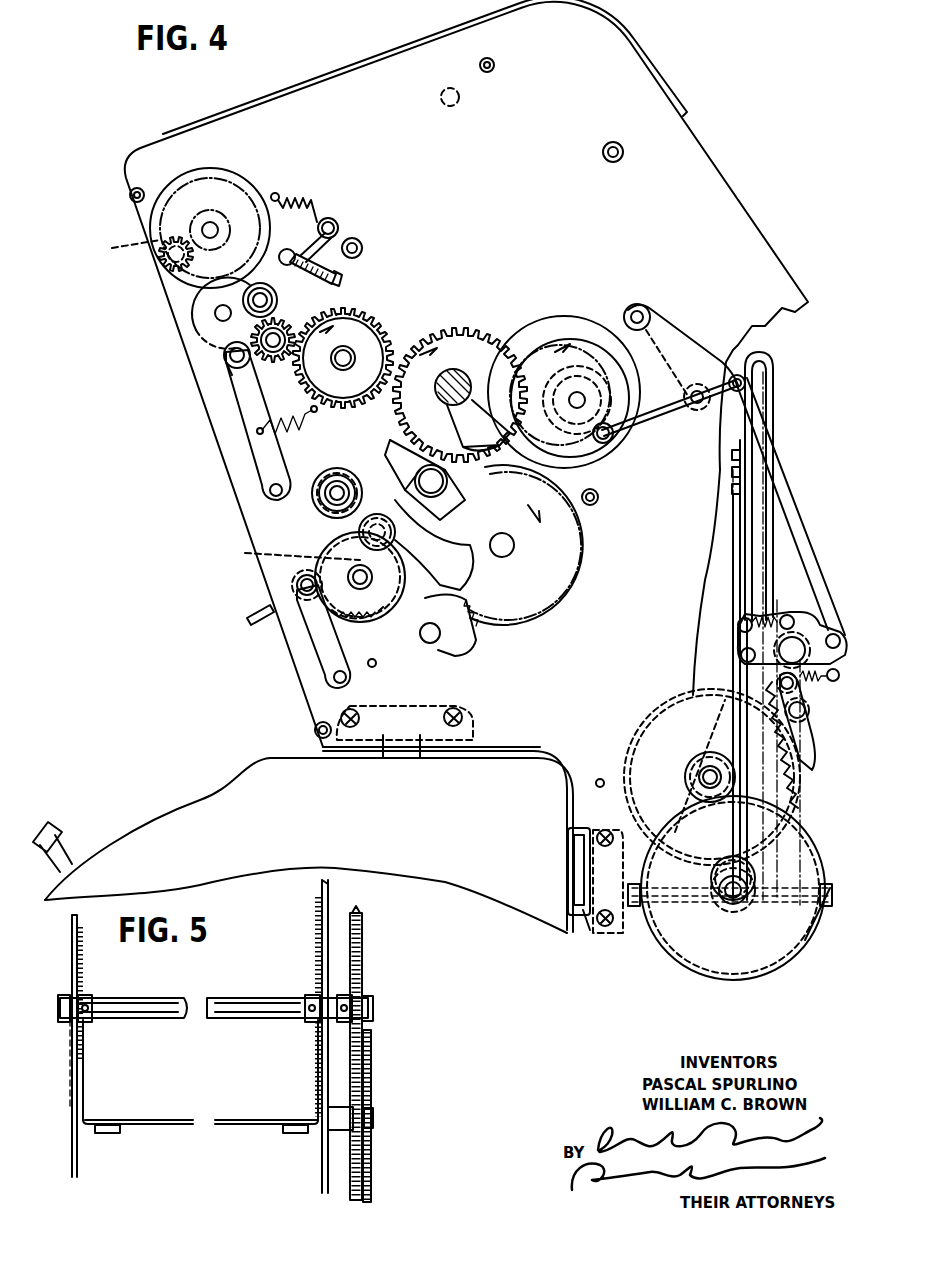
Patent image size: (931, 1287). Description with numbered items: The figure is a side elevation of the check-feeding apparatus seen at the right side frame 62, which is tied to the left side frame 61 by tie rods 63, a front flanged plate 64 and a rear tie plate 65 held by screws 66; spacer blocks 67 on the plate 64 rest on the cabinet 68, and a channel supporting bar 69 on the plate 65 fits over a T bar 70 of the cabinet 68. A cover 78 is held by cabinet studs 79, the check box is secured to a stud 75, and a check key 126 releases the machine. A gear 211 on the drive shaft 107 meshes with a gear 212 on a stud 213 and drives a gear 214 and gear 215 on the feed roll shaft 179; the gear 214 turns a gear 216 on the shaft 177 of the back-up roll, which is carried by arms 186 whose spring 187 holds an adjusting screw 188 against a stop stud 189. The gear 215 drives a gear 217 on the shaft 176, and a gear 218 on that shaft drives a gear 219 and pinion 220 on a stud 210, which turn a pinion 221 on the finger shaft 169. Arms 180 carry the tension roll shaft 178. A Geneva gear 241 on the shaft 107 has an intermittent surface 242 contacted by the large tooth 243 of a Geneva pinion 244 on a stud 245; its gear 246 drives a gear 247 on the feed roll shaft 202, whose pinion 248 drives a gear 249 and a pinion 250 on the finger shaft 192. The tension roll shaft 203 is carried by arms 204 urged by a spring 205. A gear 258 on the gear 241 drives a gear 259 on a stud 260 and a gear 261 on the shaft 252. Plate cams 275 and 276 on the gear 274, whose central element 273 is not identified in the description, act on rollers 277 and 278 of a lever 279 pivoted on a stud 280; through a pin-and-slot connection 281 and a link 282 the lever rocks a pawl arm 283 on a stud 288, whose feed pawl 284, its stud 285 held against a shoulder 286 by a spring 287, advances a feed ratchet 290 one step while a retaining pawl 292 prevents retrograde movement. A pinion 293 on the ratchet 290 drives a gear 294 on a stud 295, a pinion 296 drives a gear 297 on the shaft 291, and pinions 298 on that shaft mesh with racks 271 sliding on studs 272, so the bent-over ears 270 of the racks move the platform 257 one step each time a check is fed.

In FIG. 4, the right side frame 62 is at (733, 197).
In FIG. 5, the right side frame 62 is at (329, 888).
In FIG. 4, the cabinet or cover 78 is at (637, 40).
In FIG. 4, the cabinet studs 79 is at (495, 65).
In FIG. 4, the stud 75 is at (441, 97).
In FIG. 4, the tie rods 63 is at (621, 156).
In FIG. 4, the gear 219 is at (205, 172).
In FIG. 4, the pinion 220 is at (218, 226).
In FIG. 4, the pinion 221 is at (174, 236).
In FIG. 4, the shaft 169 is at (120, 249).
In FIG. 4, the stud 210 is at (286, 185).
In FIG. 4, the spring 187 is at (298, 204).
In FIG. 4, the adjusting screw 188 is at (338, 230).
In FIG. 4, the arms 186 is at (330, 226).
In FIG. 4, the stop stud 189 is at (287, 249).
In FIG. 4, the shaft 177 is at (262, 283).
In FIG. 4, the gear 216 is at (280, 302).
In FIG. 4, the gear 214 is at (293, 318).
In FIG. 4, the gear 212 is at (375, 318).
In FIG. 4, the stud 213 is at (351, 352).
In FIG. 4, the gear 211 is at (458, 338).
In FIG. 4, the drive shaft 107 is at (462, 372).
In FIG. 4, the Geneva gear 241 is at (448, 385).
In FIG. 4, the plate cam 275 is at (582, 320).
In FIG. 4, the plate cam 276 is at (535, 345).
In FIG. 4, the gear 274 is at (520, 340).
In FIG. 4, the hub 273 is at (580, 392).
In FIG. 4, the roller 277 is at (650, 312).
In FIG. 4, the lever 279 is at (668, 345).
In FIG. 4, the stud 280 is at (700, 390).
In FIG. 4, the pin-and-slot connection 281 is at (735, 392).
In FIG. 4, the roller 278 is at (610, 440).
In FIG. 4, the link 282 is at (782, 488).
In FIG. 4, the racks 271 is at (745, 550).
In FIG. 5, the racks 271 is at (84, 963).
In FIG. 4, the pawl-operating arm 283 is at (815, 625).
In FIG. 4, the feed pawl 284 is at (742, 638).
In FIG. 4, the stud 285 is at (742, 622).
In FIG. 4, the shoulder 286 is at (780, 627).
In FIG. 4, the spring 287 is at (750, 612).
In FIG. 4, the stud 288 is at (827, 685).
In FIG. 4, the retaining pawl 292 is at (808, 735).
In FIG. 4, the feed ratchet 290 is at (798, 780).
In FIG. 5, the feed ratchet 290 is at (363, 928).
In FIG. 4, the studs 272 is at (725, 688).
In FIG. 4, the pinion 293 is at (686, 780).
In FIG. 5, the pinion 293 is at (364, 972).
In FIG. 4, the shaft 291 is at (709, 766).
In FIG. 5, the shaft 291 is at (212, 997).
In FIG. 4, the pinions 298 is at (690, 755).
In FIG. 5, the pinions 298 is at (84, 1027).
In FIG. 4, the gear 294 is at (681, 962).
In FIG. 5, the gear 294 is at (372, 1062).
In FIG. 4, the gear 297 is at (705, 876).
In FIG. 5, the gear 297 is at (362, 910).
In FIG. 4, the pinion 296 is at (722, 906).
In FIG. 5, the pinion 296 is at (351, 1158).
In FIG. 4, the stud 295 is at (735, 898).
In FIG. 5, the stud 295 is at (374, 1114).
In FIG. 4, the platform 257 is at (828, 880).
In FIG. 5, the platform 257 is at (184, 1116).
In FIG. 4, the bent-over ears 270 is at (826, 926).
In FIG. 5, the bent-over ears 270 is at (118, 1134).
In FIG. 4, the gear 218 is at (213, 308).
In FIG. 4, the shaft 176 is at (205, 315).
In FIG. 4, the gear 217 is at (208, 328).
In FIG. 4, the shaft 178 is at (230, 356).
In FIG. 4, the shaft 179 is at (240, 380).
In FIG. 4, the arms 180 is at (245, 390).
In FIG. 4, the gear 215 is at (287, 409).
In FIG. 4, the intermittent surface 242 is at (398, 436).
In FIG. 4, the large tooth 243 is at (400, 452).
In FIG. 4, the Geneva pinion 244 is at (400, 470).
In FIG. 4, the pinion 250 is at (315, 486).
In FIG. 4, the shaft 192 is at (338, 480).
In FIG. 4, the stud 245 is at (428, 493).
In FIG. 4, the gear 259 is at (582, 550).
In FIG. 4, the gear 258 is at (578, 484).
In FIG. 4, the stud 260 is at (510, 553).
In FIG. 4, the gear 246 is at (434, 545).
In FIG. 4, the gear 247 is at (325, 546).
In FIG. 4, the gear 249 is at (330, 526).
In FIG. 4, the feed roll shaft 202 is at (348, 577).
In FIG. 4, the pinion 248 is at (282, 553).
In FIG. 4, the shaft 203 is at (297, 588).
In FIG. 4, the arms 204 is at (325, 640).
In FIG. 4, the spring 205 is at (350, 625).
In FIG. 4, the shaft 252 is at (433, 643).
In FIG. 4, the gear 261 is at (478, 640).
In FIG. 4, the flanged plate 64 is at (472, 726).
In FIG. 4, the screws 66 is at (448, 710).
In FIG. 4, the spacer blocks 67 is at (383, 758).
In FIG. 4, the cabinet 68 is at (190, 800).
In FIG. 4, the check key 126 is at (55, 828).
In FIG. 4, the T bar 70 is at (566, 862).
In FIG. 4, the tie plate 65 is at (608, 822).
In FIG. 4, the channel supporting bar 69 is at (583, 912).
In FIG. 5, the left side frame 61 is at (72, 930).